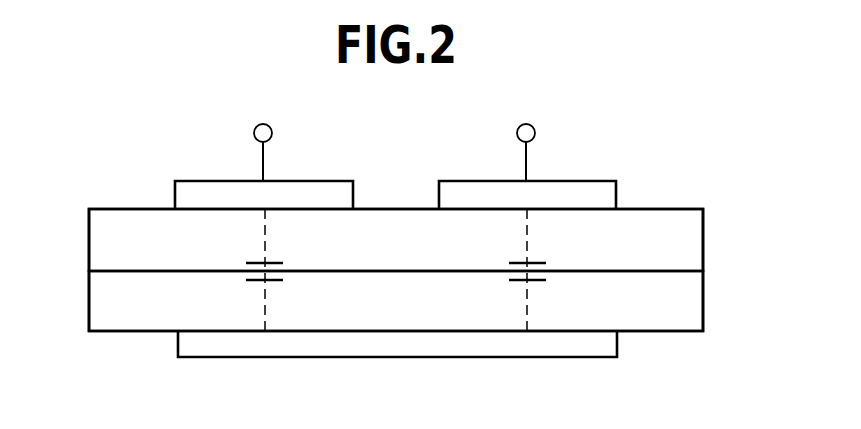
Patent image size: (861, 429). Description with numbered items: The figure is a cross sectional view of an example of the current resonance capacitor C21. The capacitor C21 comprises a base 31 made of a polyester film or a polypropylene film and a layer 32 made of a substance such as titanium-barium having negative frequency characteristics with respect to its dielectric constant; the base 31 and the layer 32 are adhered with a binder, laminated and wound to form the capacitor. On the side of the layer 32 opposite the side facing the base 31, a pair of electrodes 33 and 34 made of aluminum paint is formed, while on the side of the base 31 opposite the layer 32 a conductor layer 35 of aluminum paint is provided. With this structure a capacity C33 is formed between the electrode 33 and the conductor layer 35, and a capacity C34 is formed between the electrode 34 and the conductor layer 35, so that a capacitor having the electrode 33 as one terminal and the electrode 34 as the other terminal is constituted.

The capacitor C21 is at (714, 242).
The base 31 is at (89, 303).
The layer 32 is at (89, 241).
The electrode 33 is at (313, 181).
The electrode 34 is at (577, 181).
The conductor layer 35 is at (398, 358).
The capacity C33 is at (283, 263).
The capacity C34 is at (546, 263).